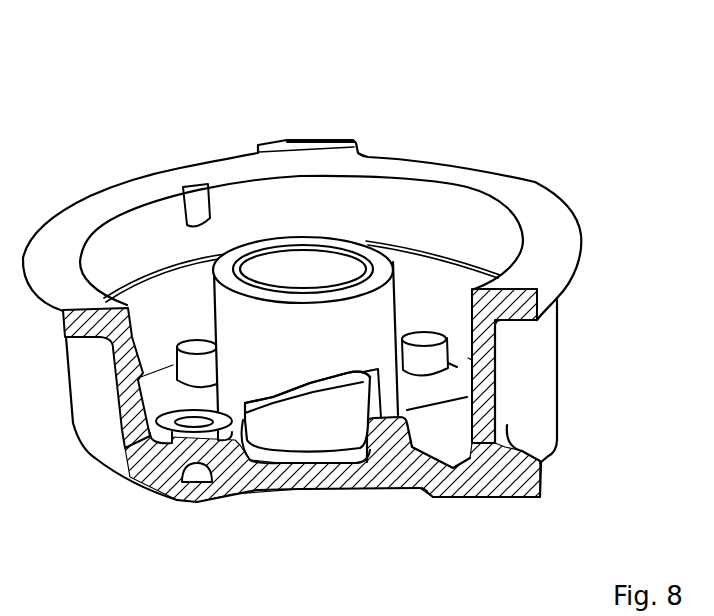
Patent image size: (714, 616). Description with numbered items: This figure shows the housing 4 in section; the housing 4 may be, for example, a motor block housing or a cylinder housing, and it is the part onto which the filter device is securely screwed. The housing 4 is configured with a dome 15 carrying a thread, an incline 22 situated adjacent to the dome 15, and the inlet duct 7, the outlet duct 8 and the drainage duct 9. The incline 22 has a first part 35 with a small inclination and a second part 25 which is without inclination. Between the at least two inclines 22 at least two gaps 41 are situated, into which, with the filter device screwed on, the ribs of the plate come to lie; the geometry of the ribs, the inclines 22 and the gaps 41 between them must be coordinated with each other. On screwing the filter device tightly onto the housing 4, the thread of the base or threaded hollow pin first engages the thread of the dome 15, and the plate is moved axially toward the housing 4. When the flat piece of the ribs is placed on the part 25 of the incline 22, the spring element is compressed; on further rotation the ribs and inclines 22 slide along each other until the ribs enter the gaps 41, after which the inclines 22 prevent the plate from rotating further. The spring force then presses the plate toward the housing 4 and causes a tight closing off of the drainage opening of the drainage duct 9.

The housing 4 is at (498, 135).
The inlet duct 7 is at (450, 453).
The outlet duct 8 is at (310, 263).
The drainage duct 9 is at (228, 402).
The dome 15 is at (393, 282).
The incline 22 is at (313, 427).
The second part 25 is at (347, 363).
The first part 35 is at (284, 393).
The gap 41 is at (196, 420).